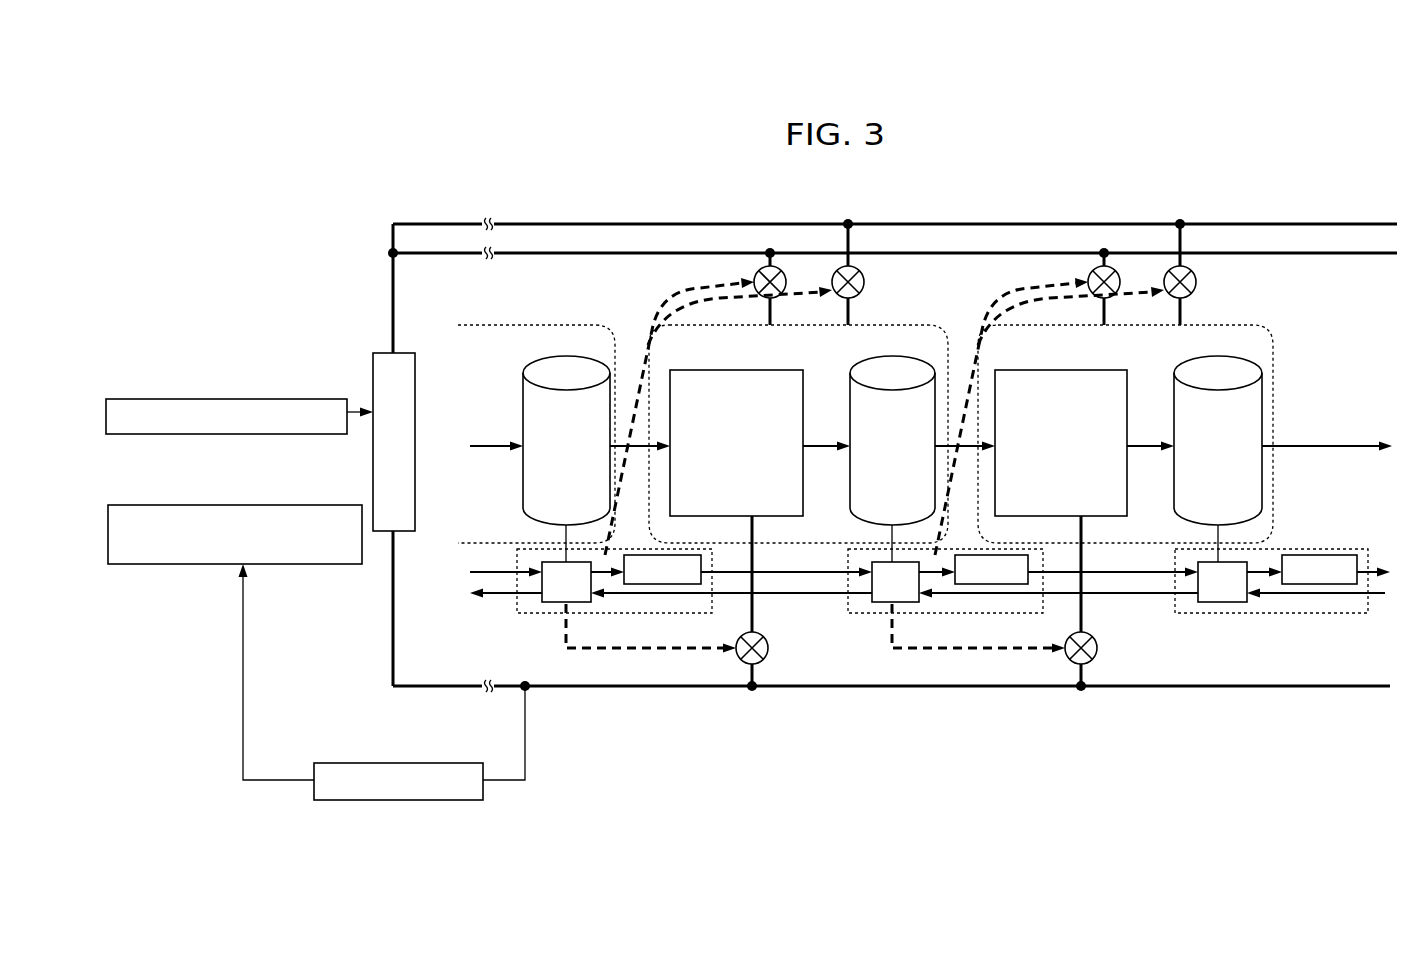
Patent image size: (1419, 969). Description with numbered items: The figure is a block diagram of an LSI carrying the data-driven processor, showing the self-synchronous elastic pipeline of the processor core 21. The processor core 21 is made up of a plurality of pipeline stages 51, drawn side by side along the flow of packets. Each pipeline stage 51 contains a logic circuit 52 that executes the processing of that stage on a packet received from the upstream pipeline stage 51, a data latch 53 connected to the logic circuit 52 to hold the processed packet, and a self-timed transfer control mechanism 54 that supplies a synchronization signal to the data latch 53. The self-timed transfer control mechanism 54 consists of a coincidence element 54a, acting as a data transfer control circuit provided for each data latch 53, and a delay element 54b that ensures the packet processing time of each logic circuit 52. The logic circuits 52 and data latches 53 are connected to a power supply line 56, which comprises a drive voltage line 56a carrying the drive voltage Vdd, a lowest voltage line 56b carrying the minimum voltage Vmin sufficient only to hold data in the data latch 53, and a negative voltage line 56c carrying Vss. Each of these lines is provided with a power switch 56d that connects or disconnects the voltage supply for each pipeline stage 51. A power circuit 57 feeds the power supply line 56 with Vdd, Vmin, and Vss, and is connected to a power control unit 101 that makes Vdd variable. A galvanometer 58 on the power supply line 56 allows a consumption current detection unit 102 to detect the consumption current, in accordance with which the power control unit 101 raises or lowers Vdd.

The processor core 21 is at (1308, 316).
The pipeline stage 51 is at (578, 325).
The logic circuit 52 is at (753, 370).
The data latch 53 is at (545, 370).
The self-timed transfer control mechanism 54 is at (660, 616).
The coincidence element 54a is at (548, 606).
The delay element 54b is at (702, 556).
The power supply line 56 is at (706, 186).
The drive voltage line 56a is at (632, 221).
The lowest voltage line 56b is at (592, 251).
The negative voltage line 56c is at (548, 692).
The power switch 56d is at (840, 268).
The power circuit 57 is at (410, 455).
The galvanometer 58 is at (382, 682).
The power control unit 101 is at (239, 402).
The consumption current detection unit 102 is at (235, 520).